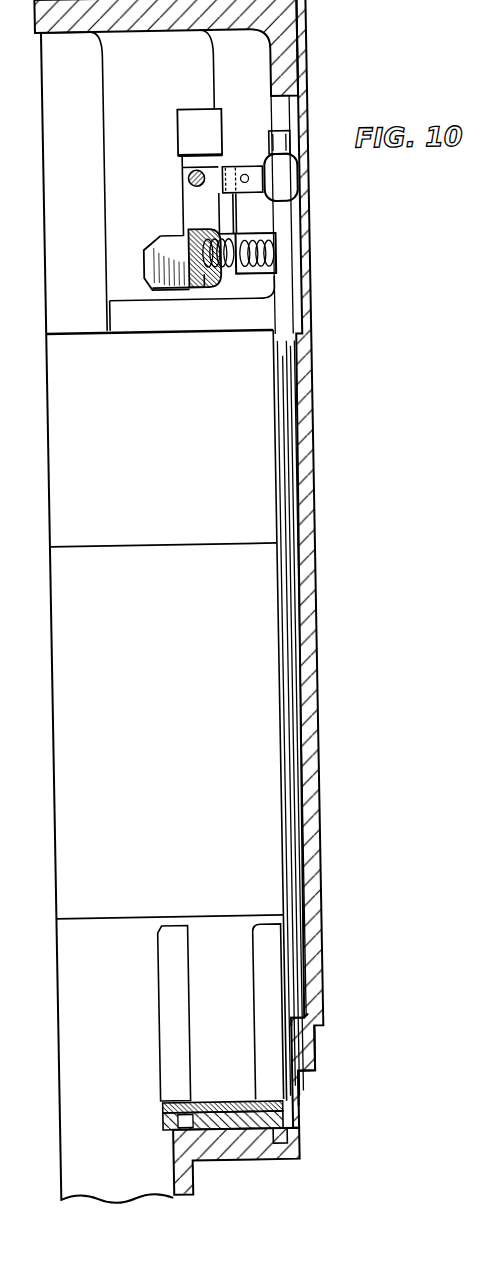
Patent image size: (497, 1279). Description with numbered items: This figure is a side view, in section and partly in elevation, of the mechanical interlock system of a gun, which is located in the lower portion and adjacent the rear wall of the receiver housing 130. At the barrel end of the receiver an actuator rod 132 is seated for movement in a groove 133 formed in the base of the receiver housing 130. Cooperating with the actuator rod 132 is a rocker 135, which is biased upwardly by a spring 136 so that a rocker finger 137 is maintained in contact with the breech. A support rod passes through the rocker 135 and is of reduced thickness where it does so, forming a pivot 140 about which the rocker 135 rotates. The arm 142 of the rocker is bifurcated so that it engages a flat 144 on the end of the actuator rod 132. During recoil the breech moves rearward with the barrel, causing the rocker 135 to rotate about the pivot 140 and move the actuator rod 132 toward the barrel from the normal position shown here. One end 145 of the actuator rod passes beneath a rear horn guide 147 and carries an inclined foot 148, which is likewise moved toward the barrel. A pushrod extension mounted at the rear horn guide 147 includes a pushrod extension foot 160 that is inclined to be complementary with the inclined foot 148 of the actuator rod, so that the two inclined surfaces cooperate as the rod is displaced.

The receiver housing 130 is at (294, 665).
The actuator rod 132 is at (280, 424).
The groove 133 is at (283, 1027).
The rocker 135 is at (186, 294).
The spring 136 is at (261, 279).
The rocker finger 137 is at (142, 292).
The pivot 140 is at (179, 182).
The arm 142 is at (284, 190).
The flat 144 is at (268, 152).
The end of the actuator rod 145 is at (290, 1100).
The rear horn guide 147 is at (145, 1021).
The inclined foot 148 is at (271, 1143).
The pushrod extension foot 160 is at (236, 1138).